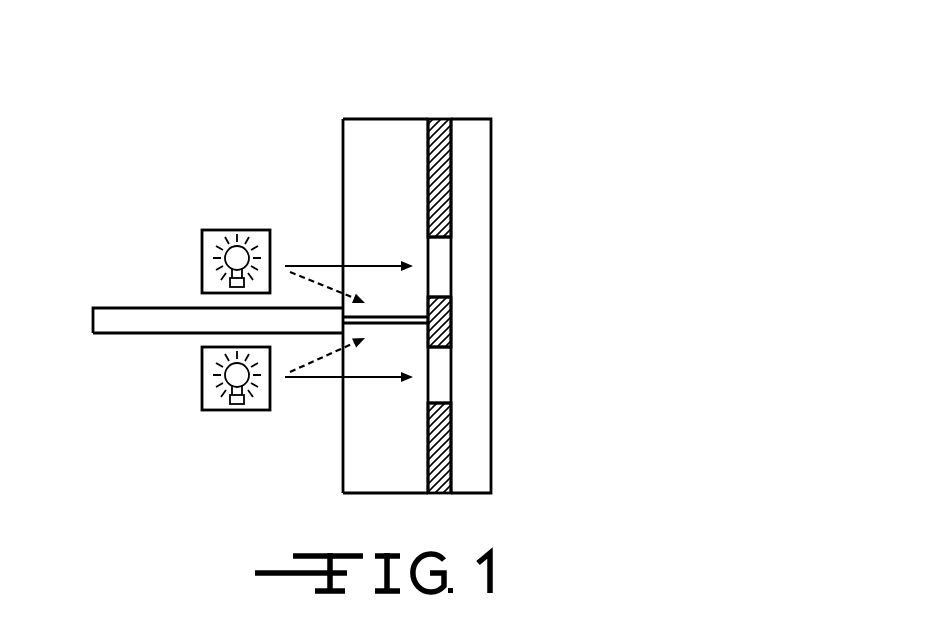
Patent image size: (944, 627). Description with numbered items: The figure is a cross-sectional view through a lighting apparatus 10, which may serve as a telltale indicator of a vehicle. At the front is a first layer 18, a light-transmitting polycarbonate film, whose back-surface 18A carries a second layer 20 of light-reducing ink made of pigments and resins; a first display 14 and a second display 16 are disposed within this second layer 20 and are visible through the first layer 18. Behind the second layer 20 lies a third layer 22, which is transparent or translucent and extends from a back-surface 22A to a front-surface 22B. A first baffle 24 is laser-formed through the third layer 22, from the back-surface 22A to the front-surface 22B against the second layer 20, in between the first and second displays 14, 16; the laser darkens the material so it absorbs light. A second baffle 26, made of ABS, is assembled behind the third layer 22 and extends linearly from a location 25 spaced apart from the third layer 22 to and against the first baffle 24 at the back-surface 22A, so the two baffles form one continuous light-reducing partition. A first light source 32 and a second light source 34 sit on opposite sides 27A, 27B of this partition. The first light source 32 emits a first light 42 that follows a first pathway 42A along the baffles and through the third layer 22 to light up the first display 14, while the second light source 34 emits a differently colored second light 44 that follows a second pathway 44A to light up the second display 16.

The lighting apparatus 10 is at (538, 69).
The first display 14 is at (439, 263).
The second display 16 is at (440, 370).
The first layer 18 is at (470, 152).
The back-surface of the first layer 18A is at (452, 130).
The second layer 20 is at (437, 130).
The third layer 22 is at (350, 128).
The back-surface of the third layer 22A is at (343, 180).
The front-surface of the third layer 22B is at (430, 127).
The first baffle 24 is at (393, 323).
The location 25 is at (113, 308).
The second baffle 26 is at (155, 327).
The first side of the baffles 27A is at (283, 226).
The second side of the baffles 27B is at (398, 362).
The first light source 32 is at (209, 230).
The second light source 34 is at (200, 405).
The first light 42 is at (349, 253).
The first pathway 42A is at (318, 282).
The second light 44 is at (314, 399).
The second pathway 44A is at (317, 360).